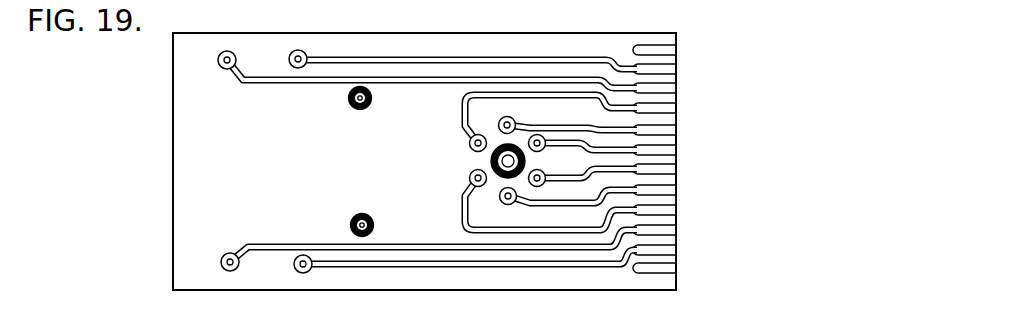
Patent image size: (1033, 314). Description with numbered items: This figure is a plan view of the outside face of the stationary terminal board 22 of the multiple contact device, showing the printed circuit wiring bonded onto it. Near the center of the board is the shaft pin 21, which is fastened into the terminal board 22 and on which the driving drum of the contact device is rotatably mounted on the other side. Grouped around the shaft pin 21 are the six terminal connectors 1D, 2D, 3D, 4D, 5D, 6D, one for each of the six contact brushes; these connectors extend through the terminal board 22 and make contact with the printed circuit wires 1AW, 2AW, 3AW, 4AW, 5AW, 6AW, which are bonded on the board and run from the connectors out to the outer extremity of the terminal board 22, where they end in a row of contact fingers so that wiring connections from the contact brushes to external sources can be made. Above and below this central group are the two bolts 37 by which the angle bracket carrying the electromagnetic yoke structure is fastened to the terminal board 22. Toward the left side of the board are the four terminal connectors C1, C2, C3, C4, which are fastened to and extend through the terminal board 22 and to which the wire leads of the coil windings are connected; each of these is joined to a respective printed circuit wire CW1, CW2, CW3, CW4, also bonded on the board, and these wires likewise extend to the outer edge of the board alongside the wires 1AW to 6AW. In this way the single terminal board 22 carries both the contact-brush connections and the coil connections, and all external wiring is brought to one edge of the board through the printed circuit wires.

The terminal board 22 is at (439, 285).
The shaft pin 21 is at (506, 161).
The bolts 37 is at (351, 98).
The terminal connector C1 is at (222, 266).
The terminal connector C2 is at (295, 267).
The terminal connector C3 is at (221, 57).
The terminal connector C4 is at (291, 56).
The terminal connector 1D is at (543, 173).
The terminal connector 2D is at (511, 203).
The terminal connector 3D is at (471, 181).
The terminal connector 4D is at (470, 143).
The terminal connector 5D is at (502, 120).
The terminal connector 6D is at (556, 121).
The printed circuit wire CW1 is at (677, 230).
The printed circuit wire CW2 is at (677, 250).
The printed circuit wire CW3 is at (677, 88).
The printed circuit wire CW4 is at (677, 69).
The printed circuit wire 1AW is at (677, 169).
The printed circuit wire 2AW is at (677, 190).
The printed circuit wire 3AW is at (677, 210).
The printed circuit wire 4AW is at (677, 108).
The printed circuit wire 5AW is at (677, 129).
The printed circuit wire 6AW is at (677, 149).